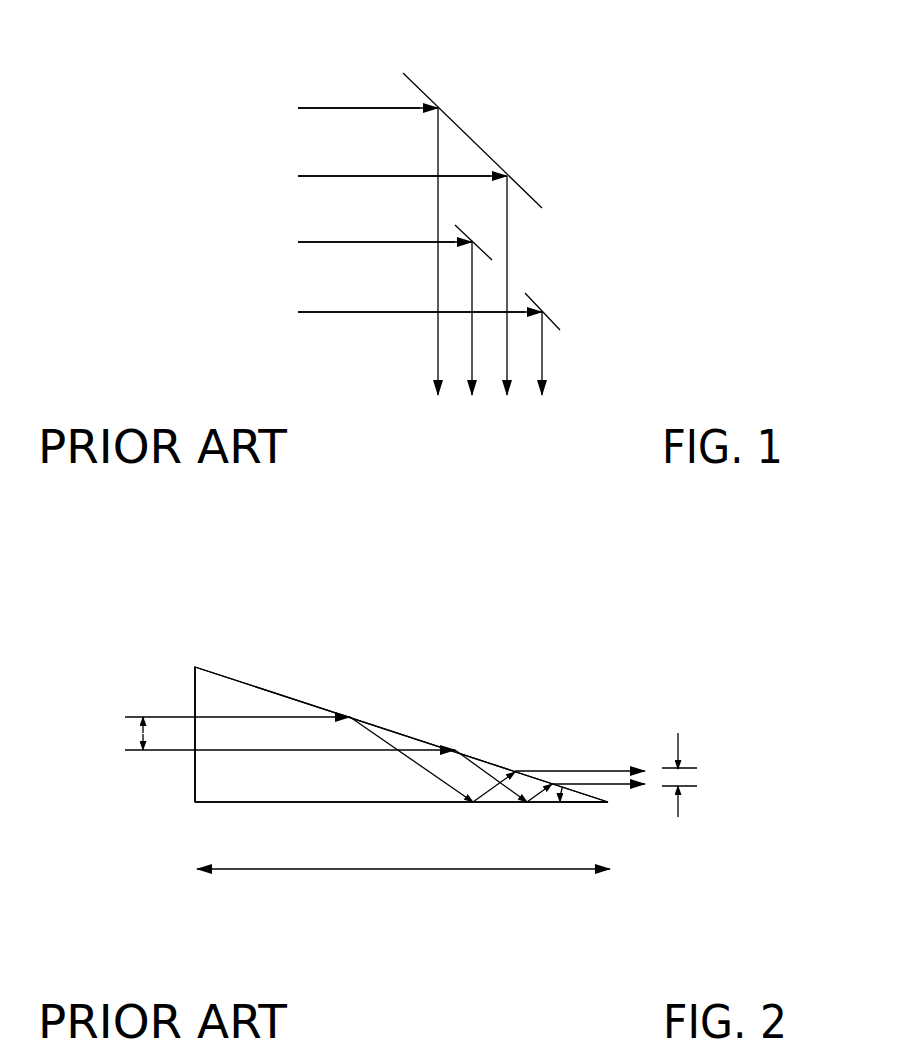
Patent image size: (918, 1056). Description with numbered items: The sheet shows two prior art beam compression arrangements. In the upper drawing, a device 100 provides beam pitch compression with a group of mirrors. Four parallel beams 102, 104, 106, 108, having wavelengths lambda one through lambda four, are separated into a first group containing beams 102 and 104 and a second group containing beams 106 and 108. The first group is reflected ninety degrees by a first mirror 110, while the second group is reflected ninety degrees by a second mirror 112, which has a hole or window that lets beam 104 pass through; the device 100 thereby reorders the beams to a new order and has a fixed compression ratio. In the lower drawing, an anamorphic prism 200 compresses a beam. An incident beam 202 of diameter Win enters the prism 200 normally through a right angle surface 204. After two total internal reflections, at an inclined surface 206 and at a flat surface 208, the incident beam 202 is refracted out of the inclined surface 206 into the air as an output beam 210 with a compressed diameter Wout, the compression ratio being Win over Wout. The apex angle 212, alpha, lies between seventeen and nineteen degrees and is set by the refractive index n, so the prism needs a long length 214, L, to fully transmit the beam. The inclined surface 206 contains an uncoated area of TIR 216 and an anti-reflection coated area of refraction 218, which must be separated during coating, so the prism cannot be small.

In FIG. 1, the device 100 is at (283, 54).
In FIG. 1, the beam 102 is at (334, 108).
In FIG. 1, the beam 104 is at (334, 176).
In FIG. 1, the beam 106 is at (334, 242).
In FIG. 1, the beam 108 is at (334, 312).
In FIG. 1, the first mirror 110 is at (492, 160).
In FIG. 1, the second mirror 112 is at (550, 318).
In FIG. 2, the anamorphic prism 200 is at (235, 680).
In FIG. 2, the incident beam 202 is at (135, 717).
In FIG. 2, the right angle surface 204 is at (195, 787).
In FIG. 2, the inclined surface 206 is at (297, 700).
In FIG. 2, the flat surface 208 is at (298, 803).
In FIG. 2, the output beam 210 is at (558, 768).
In FIG. 2, the apex angle 212 is at (542, 803).
In FIG. 2, the length 214 is at (472, 869).
In FIG. 2, the area of TIR 216 is at (400, 732).
In FIG. 2, the area of refraction 218 is at (538, 768).